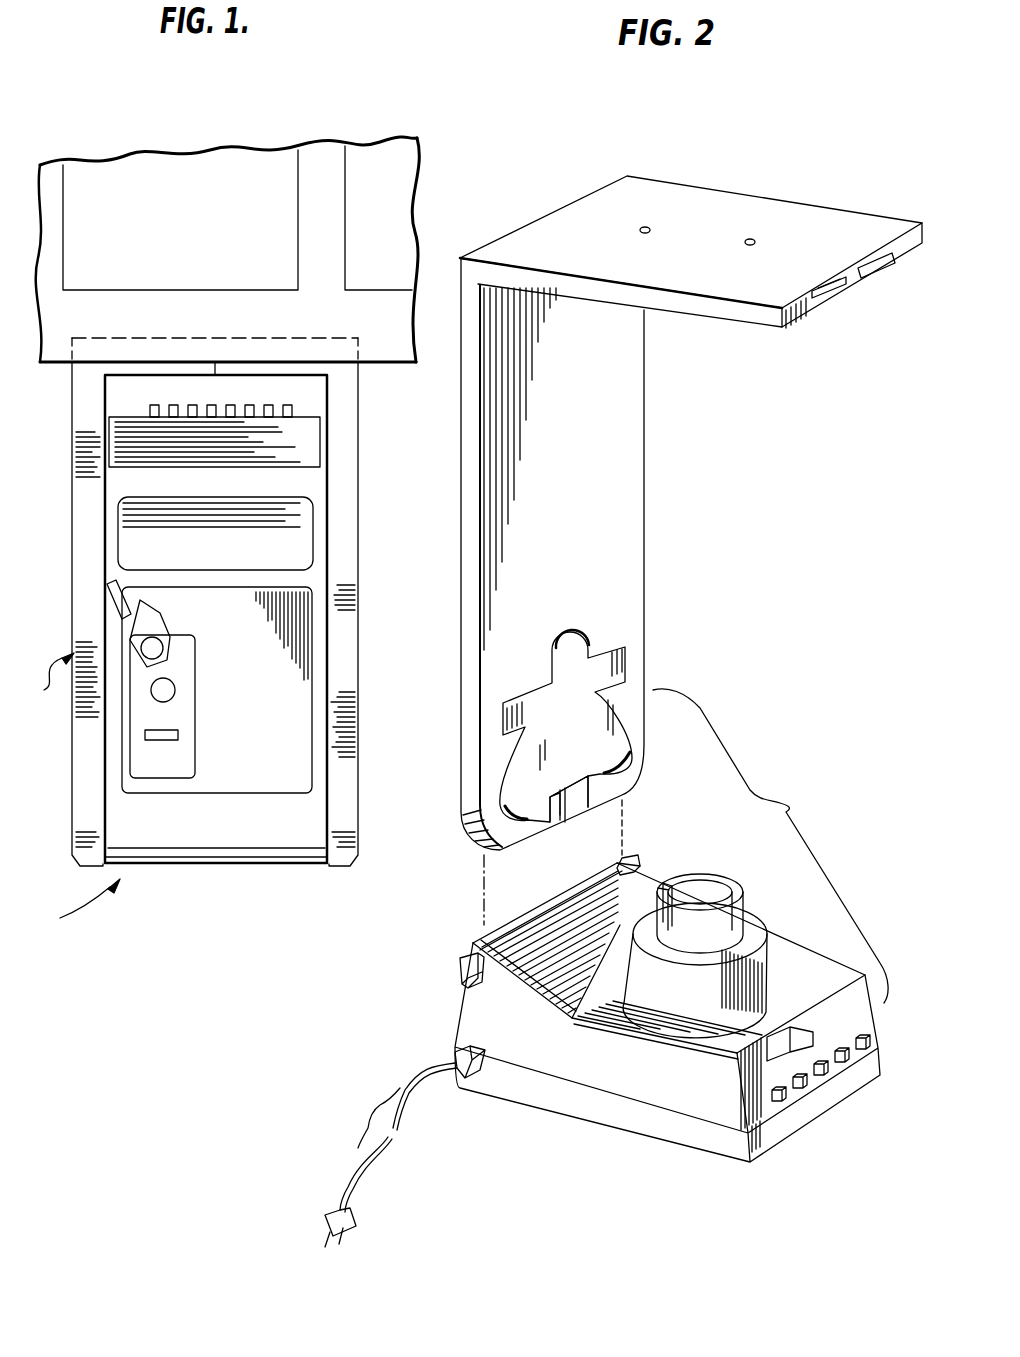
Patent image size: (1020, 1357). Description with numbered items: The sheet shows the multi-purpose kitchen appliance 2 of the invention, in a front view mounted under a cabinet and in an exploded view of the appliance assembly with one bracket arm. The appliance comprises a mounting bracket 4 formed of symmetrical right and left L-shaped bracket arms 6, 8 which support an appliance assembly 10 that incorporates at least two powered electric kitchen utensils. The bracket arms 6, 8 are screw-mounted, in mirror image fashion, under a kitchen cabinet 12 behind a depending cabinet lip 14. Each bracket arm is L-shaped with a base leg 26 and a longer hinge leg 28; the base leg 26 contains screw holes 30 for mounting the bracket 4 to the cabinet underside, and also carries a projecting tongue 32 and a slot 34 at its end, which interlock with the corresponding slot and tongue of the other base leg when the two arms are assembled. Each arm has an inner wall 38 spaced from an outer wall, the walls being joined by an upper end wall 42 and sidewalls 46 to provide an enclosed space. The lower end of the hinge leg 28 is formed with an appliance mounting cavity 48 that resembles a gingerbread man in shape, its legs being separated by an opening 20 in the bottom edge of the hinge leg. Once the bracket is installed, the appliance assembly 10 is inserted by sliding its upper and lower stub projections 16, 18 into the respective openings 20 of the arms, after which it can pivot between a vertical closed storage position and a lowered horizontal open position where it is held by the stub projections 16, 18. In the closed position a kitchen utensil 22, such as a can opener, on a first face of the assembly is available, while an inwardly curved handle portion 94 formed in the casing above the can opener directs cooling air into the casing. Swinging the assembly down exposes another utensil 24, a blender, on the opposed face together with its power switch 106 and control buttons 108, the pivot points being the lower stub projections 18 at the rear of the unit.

In FIG. 1, the multi-purpose kitchen appliance 2 is at (79, 904).
In FIG. 1, the mounting bracket 4 is at (48, 679).
In FIG. 1, the L-shaped bracket arm 6 is at (78, 513).
In FIG. 1, the L-shaped bracket arm 8 is at (345, 578).
In FIG. 2, the L-shaped bracket arm 8 is at (572, 451).
In FIG. 1, the appliance assembly 10 is at (242, 835).
In FIG. 2, the appliance assembly 10 is at (656, 1076).
In FIG. 1, the kitchen cabinet 12 is at (331, 213).
In FIG. 1, the cabinet lip 14 is at (388, 347).
In FIG. 2, the upper stub projection 16 is at (459, 966).
In FIG. 2, the lower stub projection 18 is at (482, 1070).
In FIG. 2, the opening 20 is at (573, 798).
In FIG. 1, the kitchen utensil (can opener) 22 is at (190, 657).
In FIG. 2, the utensil (blender) 24 is at (757, 940).
In FIG. 2, the base leg 26 is at (740, 276).
In FIG. 2, the hinge leg 28 is at (625, 562).
In FIG. 2, the screw holes 30 is at (751, 238).
In FIG. 2, the projecting tongue 32 is at (882, 281).
In FIG. 2, the slot 34 is at (842, 297).
In FIG. 2, the inner wall 38 is at (625, 506).
In FIG. 2, the upper end wall 42 is at (803, 312).
In FIG. 2, the sidewall 46 is at (466, 480).
In FIG. 2, the appliance mounting cavity 48 is at (588, 738).
In FIG. 1, the inwardly curved handle portion 94 is at (292, 540).
In FIG. 2, the power switch 106 is at (800, 1033).
In FIG. 2, the control buttons 108 is at (780, 1102).